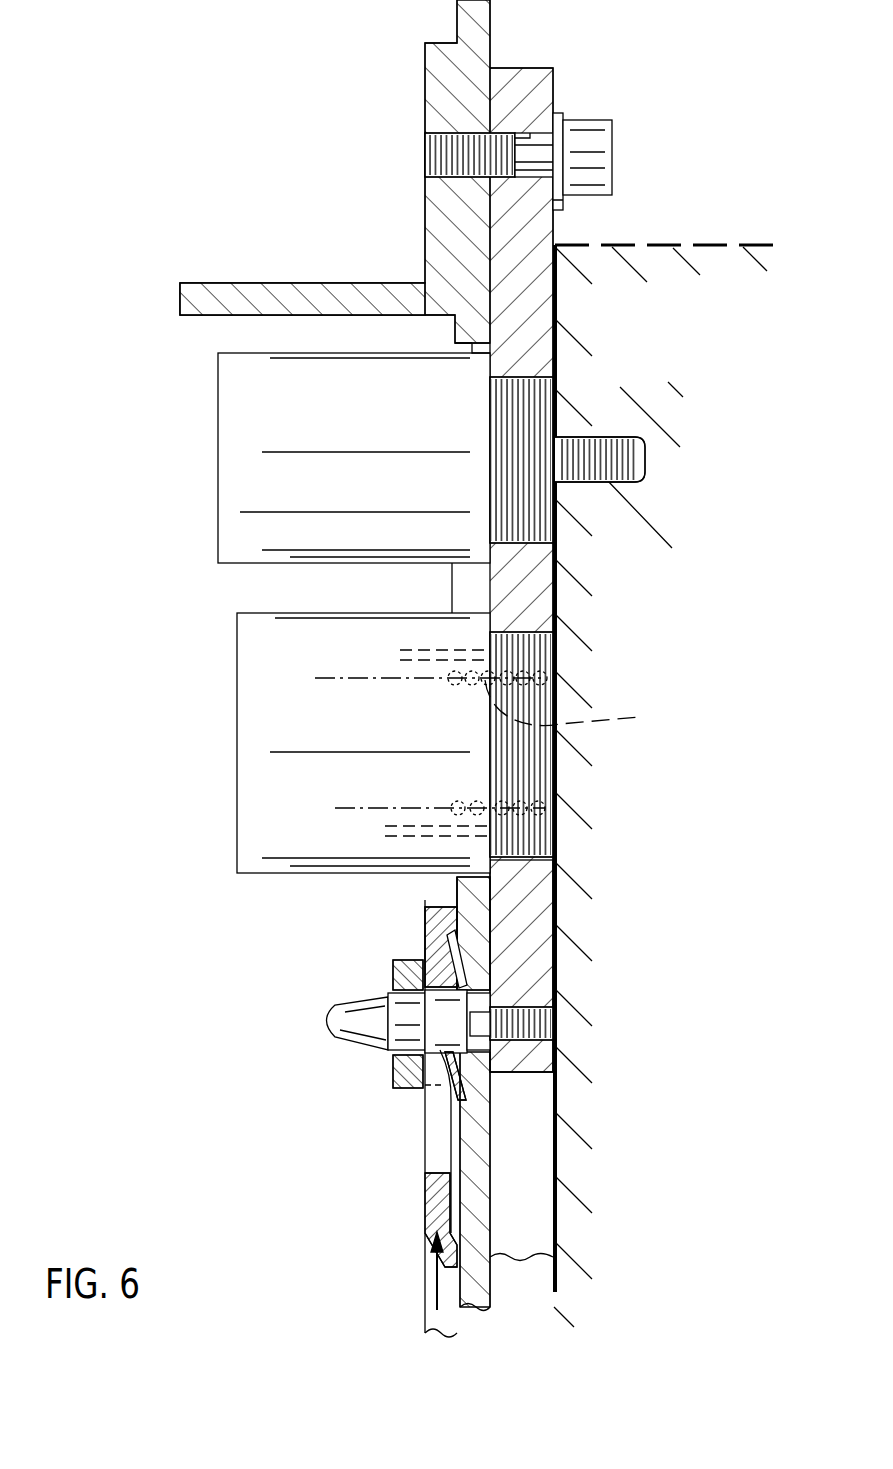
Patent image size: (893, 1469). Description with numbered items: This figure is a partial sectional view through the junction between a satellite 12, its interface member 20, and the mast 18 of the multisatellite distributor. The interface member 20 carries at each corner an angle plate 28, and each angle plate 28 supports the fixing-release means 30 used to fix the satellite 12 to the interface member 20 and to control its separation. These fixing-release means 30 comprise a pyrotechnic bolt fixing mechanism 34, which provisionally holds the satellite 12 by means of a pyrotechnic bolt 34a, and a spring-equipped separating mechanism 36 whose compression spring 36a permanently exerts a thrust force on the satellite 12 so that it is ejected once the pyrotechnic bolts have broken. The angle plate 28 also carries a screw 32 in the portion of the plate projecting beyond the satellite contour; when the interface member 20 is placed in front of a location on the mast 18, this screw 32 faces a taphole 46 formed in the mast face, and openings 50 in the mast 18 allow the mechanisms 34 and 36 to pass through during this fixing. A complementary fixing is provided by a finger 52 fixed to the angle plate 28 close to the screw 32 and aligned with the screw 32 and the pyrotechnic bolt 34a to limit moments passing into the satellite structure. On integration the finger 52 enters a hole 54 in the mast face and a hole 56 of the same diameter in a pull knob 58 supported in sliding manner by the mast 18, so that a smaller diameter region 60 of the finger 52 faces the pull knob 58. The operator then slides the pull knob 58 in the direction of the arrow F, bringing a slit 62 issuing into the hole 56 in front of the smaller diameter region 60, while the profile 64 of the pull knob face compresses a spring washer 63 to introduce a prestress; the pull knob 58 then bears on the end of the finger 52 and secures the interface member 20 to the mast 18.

The satellite 12 is at (672, 245).
The mast 18 is at (420, 85).
The interface member 20 is at (552, 65).
The angle plate 28 is at (560, 895).
The fixing-release means 30 is at (324, 613).
The screw 32 is at (595, 145).
The pyrotechnic bolt fixing mechanism 34 is at (358, 501).
The pyrotechnic bolt 34a is at (620, 452).
The separating mechanism 36 is at (365, 734).
The compression spring 36a is at (589, 707).
The taphole 46 is at (445, 150).
The opening 50 is at (480, 352).
The finger 52 is at (320, 1020).
The hole 54 is at (560, 990).
The hole 56 is at (425, 1010).
The pull knob 58 is at (425, 912).
The smaller diameter region 60 is at (395, 1077).
The slit 62 is at (433, 1143).
The spring washer 63 is at (485, 1087).
The profile 64 is at (480, 1120).
The arrow F is at (437, 1295).